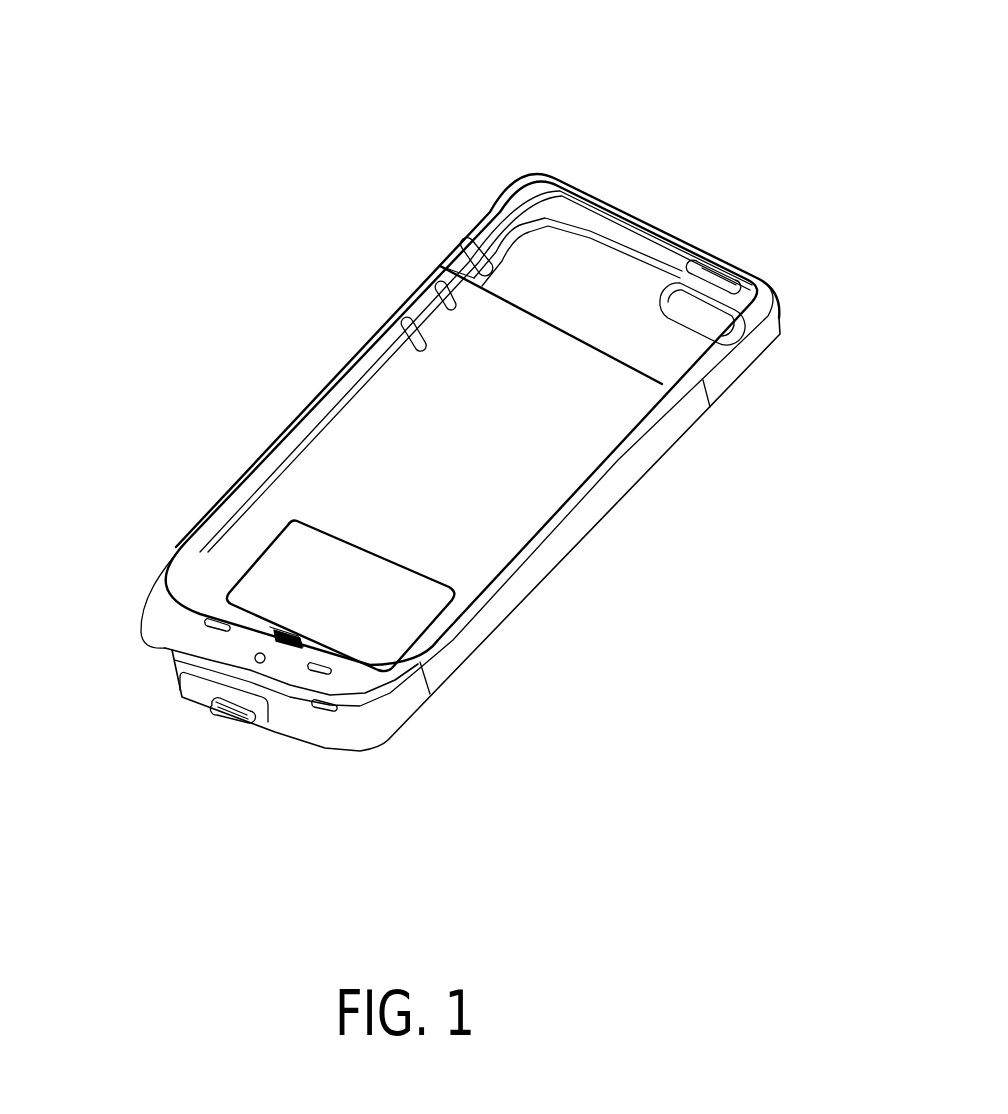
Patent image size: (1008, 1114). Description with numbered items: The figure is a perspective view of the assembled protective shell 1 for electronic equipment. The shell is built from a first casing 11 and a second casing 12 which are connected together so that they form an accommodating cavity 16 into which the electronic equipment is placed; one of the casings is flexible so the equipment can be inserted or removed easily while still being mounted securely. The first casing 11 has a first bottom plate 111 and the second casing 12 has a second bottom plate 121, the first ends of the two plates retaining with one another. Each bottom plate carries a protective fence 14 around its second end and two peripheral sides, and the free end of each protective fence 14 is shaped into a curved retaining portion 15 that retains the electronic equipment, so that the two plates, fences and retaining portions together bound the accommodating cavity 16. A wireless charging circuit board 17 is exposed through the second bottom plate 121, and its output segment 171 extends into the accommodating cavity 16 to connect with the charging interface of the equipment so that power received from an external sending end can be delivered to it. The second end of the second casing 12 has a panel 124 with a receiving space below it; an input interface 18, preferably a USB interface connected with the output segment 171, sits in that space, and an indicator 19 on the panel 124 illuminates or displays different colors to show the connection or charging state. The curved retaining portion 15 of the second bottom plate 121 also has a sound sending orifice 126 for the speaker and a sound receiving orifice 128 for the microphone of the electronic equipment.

The protective shell 1 is at (38, 58).
The first casing 11 is at (716, 242).
The first bottom plate 111 is at (598, 283).
The second casing 12 is at (476, 674).
The second bottom plate 121 is at (470, 545).
The panel 124 is at (290, 676).
The sound sending orifice 126 is at (205, 622).
The sound receiving orifice 128 is at (329, 672).
The protective fence 14 is at (540, 216).
The curved retaining portion 15 is at (265, 440).
The accommodating cavity 16 is at (460, 363).
The wireless charging circuit board 17 is at (290, 570).
The output segment 171 is at (272, 632).
The input interface 18 is at (231, 719).
The indicator 19 is at (257, 663).